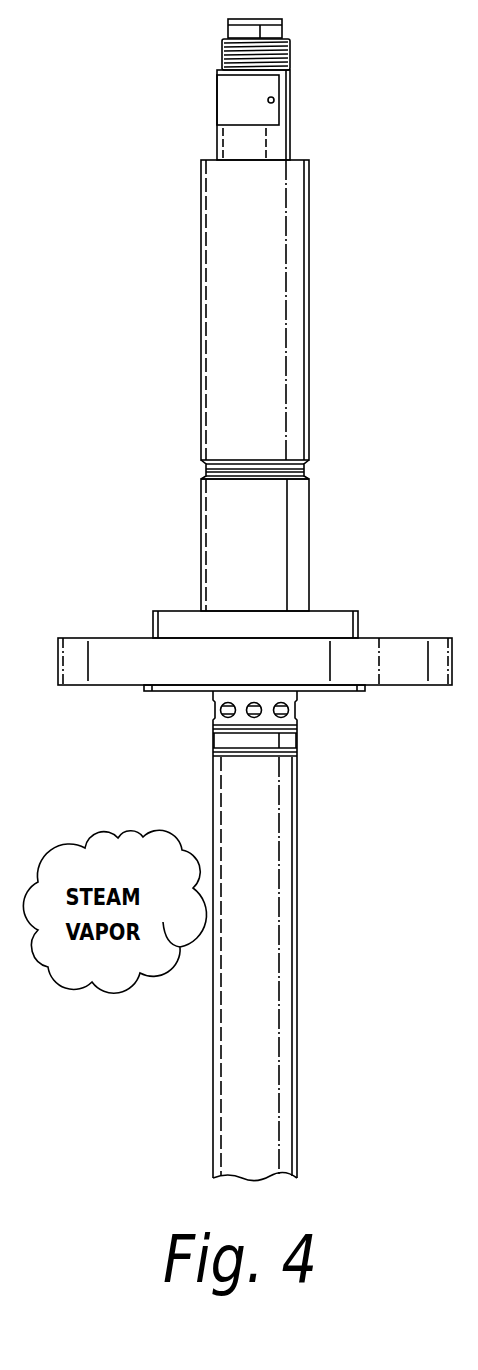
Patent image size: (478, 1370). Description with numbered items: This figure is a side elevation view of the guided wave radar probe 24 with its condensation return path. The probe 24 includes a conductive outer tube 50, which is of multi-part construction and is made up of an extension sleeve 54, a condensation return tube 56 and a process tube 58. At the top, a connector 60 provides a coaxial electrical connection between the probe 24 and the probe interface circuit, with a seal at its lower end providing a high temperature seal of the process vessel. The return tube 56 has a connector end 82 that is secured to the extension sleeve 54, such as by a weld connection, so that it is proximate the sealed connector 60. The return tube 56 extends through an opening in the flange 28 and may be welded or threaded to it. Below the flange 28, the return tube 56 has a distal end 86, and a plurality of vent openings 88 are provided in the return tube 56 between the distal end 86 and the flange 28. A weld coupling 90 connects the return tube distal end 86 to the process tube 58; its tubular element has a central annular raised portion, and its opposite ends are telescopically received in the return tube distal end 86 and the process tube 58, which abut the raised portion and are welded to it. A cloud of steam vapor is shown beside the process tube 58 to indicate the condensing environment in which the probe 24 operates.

The probe 24 is at (150, 455).
The flange 28 is at (76, 650).
The conductive outer tube 50 is at (312, 963).
The extension sleeve 54 is at (311, 336).
The condensation return tube 56 is at (310, 539).
The process tube 58 is at (298, 1090).
The connector 60 is at (304, 115).
The connector end 82 is at (308, 471).
The distal end 86 is at (297, 726).
The vent openings 88 is at (222, 709).
The weld coupling 90 is at (222, 740).